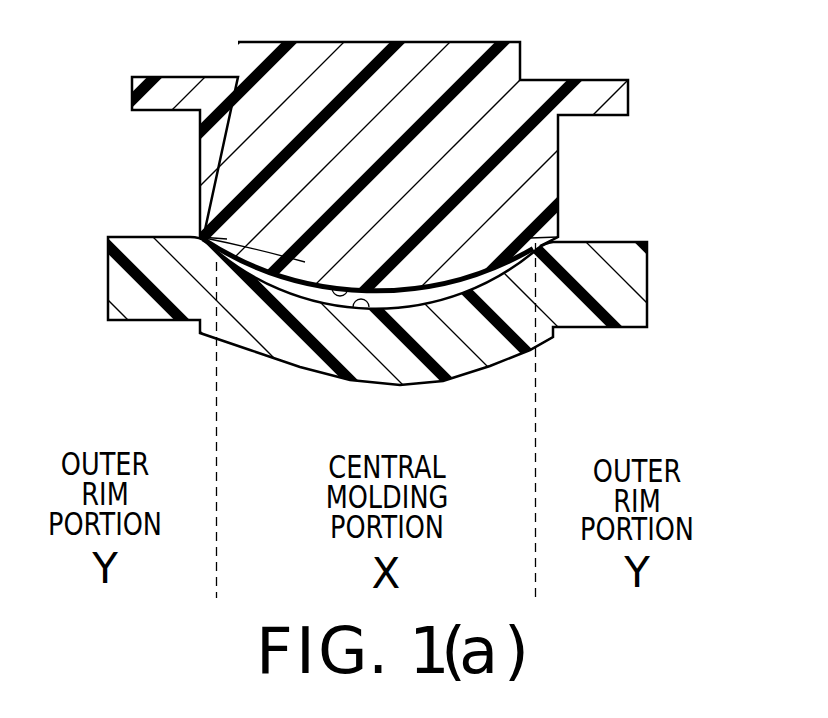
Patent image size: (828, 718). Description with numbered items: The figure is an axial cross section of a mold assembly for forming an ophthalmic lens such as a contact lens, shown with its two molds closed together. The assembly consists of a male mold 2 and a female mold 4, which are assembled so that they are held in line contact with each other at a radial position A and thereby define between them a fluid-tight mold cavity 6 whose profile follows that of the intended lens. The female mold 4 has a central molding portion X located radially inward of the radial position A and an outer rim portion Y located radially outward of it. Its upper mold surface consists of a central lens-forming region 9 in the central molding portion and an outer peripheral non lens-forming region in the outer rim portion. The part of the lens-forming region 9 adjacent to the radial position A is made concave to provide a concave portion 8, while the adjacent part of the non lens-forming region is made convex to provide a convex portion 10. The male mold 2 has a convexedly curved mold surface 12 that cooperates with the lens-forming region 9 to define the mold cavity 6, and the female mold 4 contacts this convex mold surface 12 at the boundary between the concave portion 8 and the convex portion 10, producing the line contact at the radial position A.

The male mold 2 is at (590, 50).
The female mold 4 is at (655, 277).
The mold cavity 6 is at (408, 297).
The concave portion 8 is at (535, 334).
The central lens-forming region 9 is at (357, 306).
The convex portion 10 is at (545, 240).
The convexedly curved mold surface 12 is at (330, 278).
The radial position A is at (227, 238).